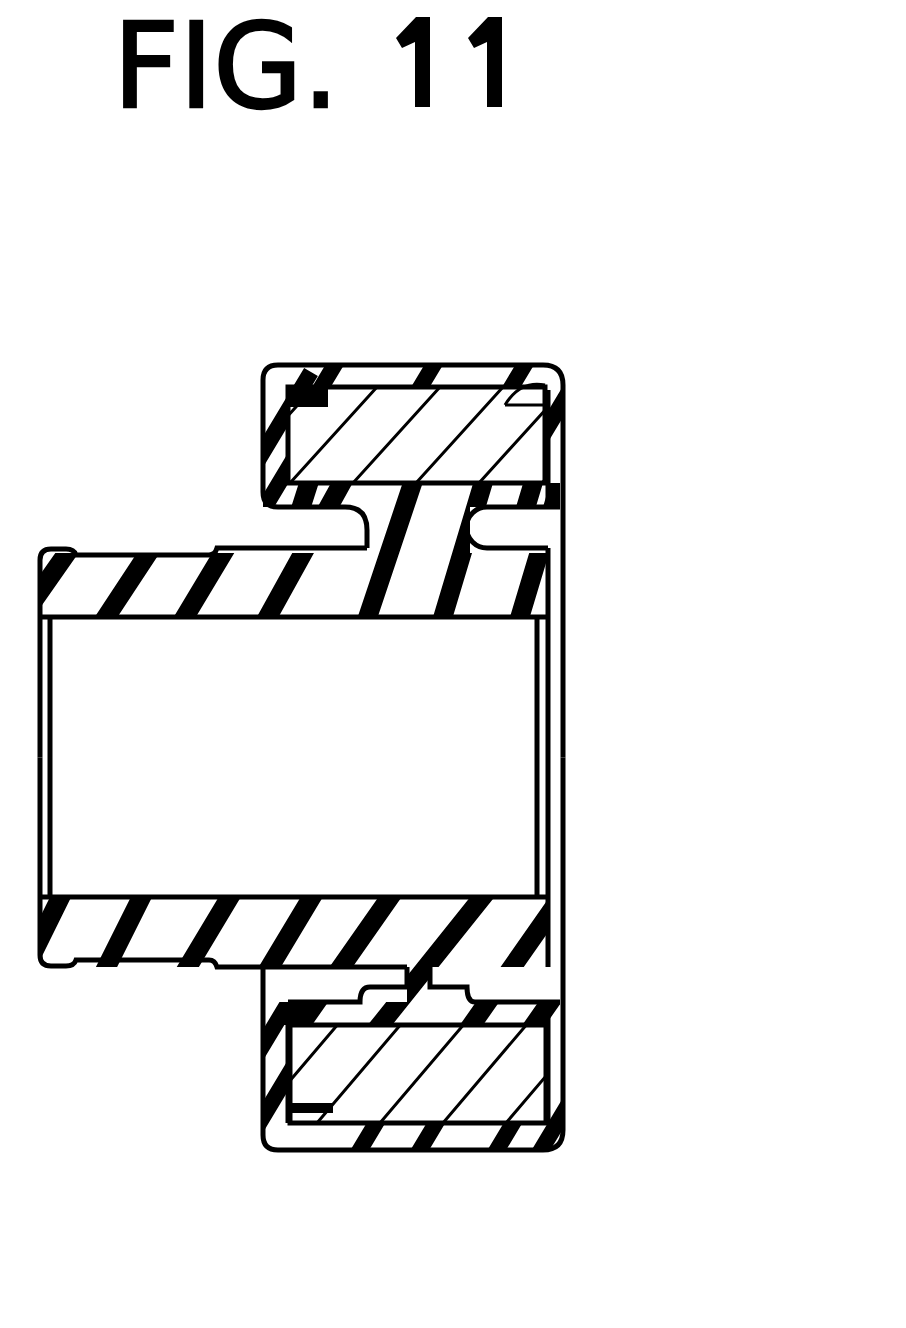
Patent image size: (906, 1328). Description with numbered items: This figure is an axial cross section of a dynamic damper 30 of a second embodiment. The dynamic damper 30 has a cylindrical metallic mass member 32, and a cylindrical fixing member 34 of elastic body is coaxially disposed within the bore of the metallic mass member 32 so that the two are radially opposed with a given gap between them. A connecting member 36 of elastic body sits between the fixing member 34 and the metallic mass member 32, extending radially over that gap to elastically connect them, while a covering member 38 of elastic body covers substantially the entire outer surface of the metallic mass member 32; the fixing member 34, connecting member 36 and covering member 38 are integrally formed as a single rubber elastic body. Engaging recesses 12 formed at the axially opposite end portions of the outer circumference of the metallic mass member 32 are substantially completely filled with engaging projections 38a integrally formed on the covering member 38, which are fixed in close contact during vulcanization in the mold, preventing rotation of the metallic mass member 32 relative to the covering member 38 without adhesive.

The engaging recesses 12 is at (322, 392).
The dynamic damper 30 is at (232, 447).
The metallic mass member 32 is at (528, 420).
The fixing member 34 is at (527, 570).
The connecting member 36 is at (383, 546).
The covering member 38 is at (453, 375).
The engaging projections 38a is at (537, 377).